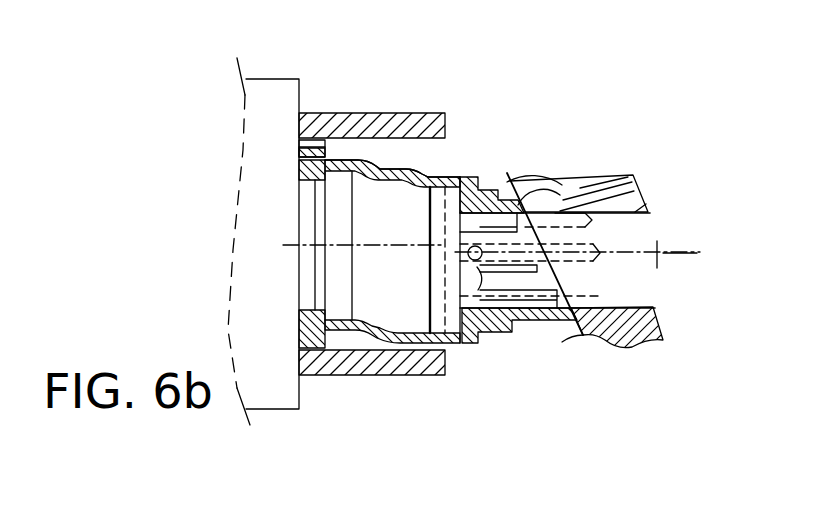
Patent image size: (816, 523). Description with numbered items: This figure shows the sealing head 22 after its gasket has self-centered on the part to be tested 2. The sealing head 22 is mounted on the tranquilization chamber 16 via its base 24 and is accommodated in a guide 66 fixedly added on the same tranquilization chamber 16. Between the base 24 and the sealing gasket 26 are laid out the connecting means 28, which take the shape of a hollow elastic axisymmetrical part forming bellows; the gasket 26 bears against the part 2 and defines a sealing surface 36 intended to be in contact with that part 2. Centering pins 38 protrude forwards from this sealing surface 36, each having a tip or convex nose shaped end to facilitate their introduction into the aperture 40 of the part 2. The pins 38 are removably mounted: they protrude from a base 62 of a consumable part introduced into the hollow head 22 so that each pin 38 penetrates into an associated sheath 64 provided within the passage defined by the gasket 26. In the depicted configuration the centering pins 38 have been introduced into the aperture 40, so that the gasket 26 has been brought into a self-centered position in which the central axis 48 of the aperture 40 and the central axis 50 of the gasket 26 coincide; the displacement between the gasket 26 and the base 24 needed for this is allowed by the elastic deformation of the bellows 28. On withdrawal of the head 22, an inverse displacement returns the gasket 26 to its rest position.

The tranquilization chamber 16 is at (272, 88).
The base 24 is at (310, 157).
The sealing head 22 is at (363, 146).
The connecting means 28 is at (392, 163).
The guide 66 is at (427, 113).
The base of consumable part 62 is at (452, 177).
The sheaths 64 is at (493, 303).
The sealing gasket 26 is at (518, 177).
The sealing surface 36 is at (540, 190).
The centering pins 38 is at (555, 218).
The part to be tested 2 is at (640, 181).
The central axis of the aperture 48 is at (678, 253).
The central axis of the sealing gasket 50 is at (577, 254).
The aperture 40 is at (633, 305).